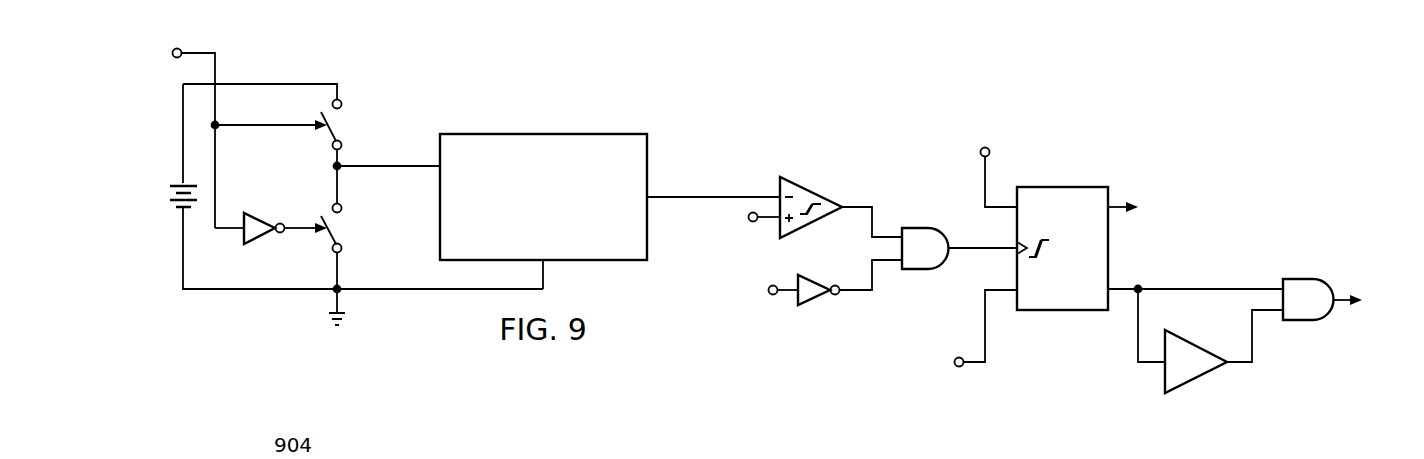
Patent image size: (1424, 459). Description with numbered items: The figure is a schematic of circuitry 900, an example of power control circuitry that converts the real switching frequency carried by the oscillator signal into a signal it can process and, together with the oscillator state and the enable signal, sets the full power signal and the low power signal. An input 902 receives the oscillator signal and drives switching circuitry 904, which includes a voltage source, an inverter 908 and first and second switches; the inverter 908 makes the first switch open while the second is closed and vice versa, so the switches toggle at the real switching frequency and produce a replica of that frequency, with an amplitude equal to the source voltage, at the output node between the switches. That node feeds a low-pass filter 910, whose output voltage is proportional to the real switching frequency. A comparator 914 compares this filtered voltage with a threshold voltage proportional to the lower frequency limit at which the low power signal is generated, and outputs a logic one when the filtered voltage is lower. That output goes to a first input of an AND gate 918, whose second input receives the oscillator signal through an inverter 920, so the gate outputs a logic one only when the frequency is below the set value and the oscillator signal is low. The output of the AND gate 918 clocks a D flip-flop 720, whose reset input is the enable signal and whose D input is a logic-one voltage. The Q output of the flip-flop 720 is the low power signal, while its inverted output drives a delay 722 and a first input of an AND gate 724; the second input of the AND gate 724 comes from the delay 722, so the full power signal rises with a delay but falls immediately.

The circuitry 900 is at (1177, 141).
The input 902 is at (148, 93).
The switching circuitry 904 is at (279, 74).
The inverter 908 is at (263, 239).
The low-pass filter 910 is at (543, 134).
The comparator 914 is at (812, 192).
The AND gate 918 is at (923, 226).
The inverter 920 is at (820, 300).
The D flip-flop 720 is at (1062, 187).
The delay 722 is at (1200, 379).
The AND gate 724 is at (1303, 279).